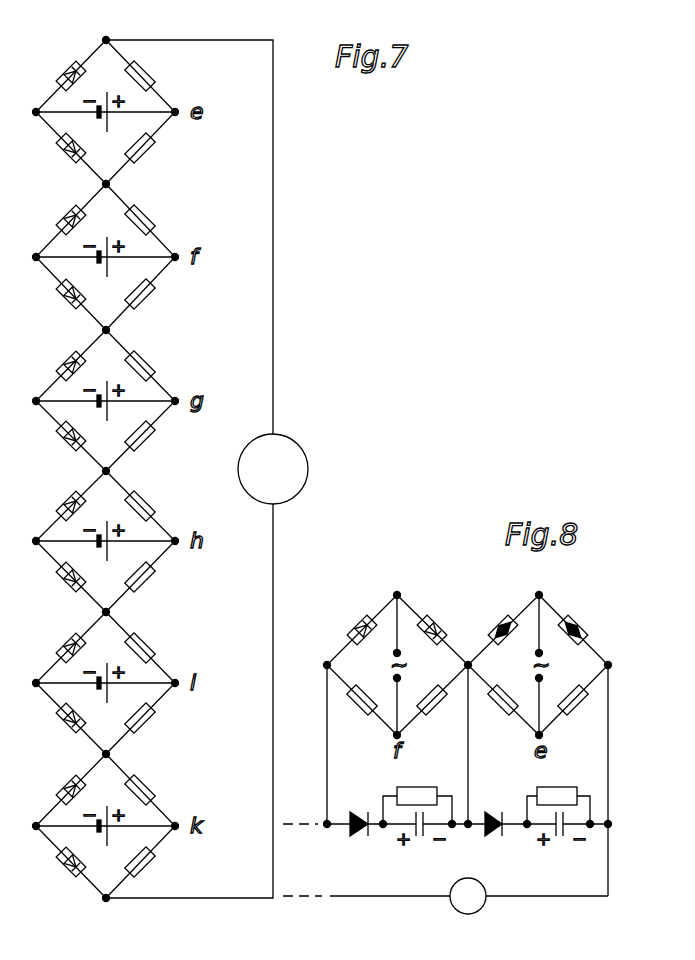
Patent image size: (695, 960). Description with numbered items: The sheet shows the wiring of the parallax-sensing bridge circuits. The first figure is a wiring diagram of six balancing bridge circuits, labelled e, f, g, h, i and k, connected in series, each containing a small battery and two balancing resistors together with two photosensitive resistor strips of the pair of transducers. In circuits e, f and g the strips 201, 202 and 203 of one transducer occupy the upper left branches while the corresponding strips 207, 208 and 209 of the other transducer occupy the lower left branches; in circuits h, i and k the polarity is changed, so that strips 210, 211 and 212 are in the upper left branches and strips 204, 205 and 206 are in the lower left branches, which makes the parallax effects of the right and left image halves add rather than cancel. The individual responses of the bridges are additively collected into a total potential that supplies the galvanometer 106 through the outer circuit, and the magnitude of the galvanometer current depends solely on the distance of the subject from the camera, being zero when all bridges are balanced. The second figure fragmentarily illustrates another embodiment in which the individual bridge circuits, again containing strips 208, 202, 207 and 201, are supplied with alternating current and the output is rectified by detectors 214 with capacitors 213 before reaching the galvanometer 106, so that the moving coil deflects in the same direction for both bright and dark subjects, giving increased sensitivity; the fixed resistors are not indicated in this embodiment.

In FIG. 7, the galvanometer 106 is at (306, 466).
In FIG. 8, the galvanometer 106 is at (469, 884).
In FIG. 7, the photosensitive resistor strip 201 is at (63, 80).
In FIG. 8, the photosensitive resistor strip 201 is at (580, 625).
In FIG. 7, the photosensitive resistor strip 202 is at (63, 224).
In FIG. 8, the photosensitive resistor strip 202 is at (446, 614).
In FIG. 7, the photosensitive resistor strip 203 is at (63, 370).
In FIG. 7, the photosensitive resistor strip 204 is at (63, 583).
In FIG. 7, the photosensitive resistor strip 205 is at (63, 724).
In FIG. 7, the photosensitive resistor strip 206 is at (63, 868).
In FIG. 7, the photosensitive resistor strip 207 is at (63, 154).
In FIG. 8, the photosensitive resistor strip 207 is at (500, 620).
In FIG. 7, the photosensitive resistor strip 208 is at (63, 300).
In FIG. 8, the photosensitive resistor strip 208 is at (364, 620).
In FIG. 7, the photosensitive resistor strip 209 is at (63, 442).
In FIG. 7, the photosensitive resistor strip 210 is at (63, 510).
In FIG. 7, the photosensitive resistor strip 211 is at (63, 652).
In FIG. 7, the photosensitive resistor strip 212 is at (63, 794).
In FIG. 8, the capacitor 213 is at (418, 787).
In FIG. 8, the detector 214 is at (357, 811).